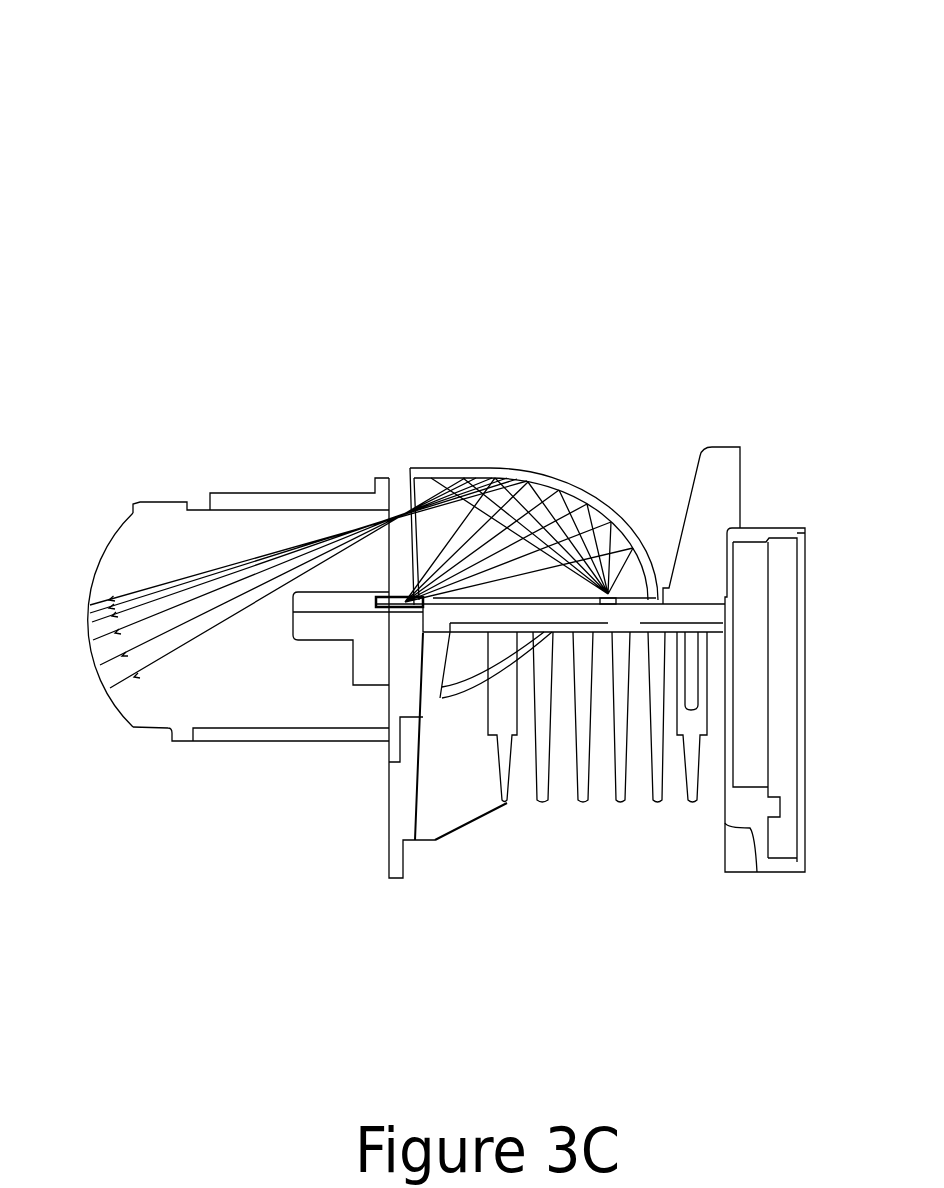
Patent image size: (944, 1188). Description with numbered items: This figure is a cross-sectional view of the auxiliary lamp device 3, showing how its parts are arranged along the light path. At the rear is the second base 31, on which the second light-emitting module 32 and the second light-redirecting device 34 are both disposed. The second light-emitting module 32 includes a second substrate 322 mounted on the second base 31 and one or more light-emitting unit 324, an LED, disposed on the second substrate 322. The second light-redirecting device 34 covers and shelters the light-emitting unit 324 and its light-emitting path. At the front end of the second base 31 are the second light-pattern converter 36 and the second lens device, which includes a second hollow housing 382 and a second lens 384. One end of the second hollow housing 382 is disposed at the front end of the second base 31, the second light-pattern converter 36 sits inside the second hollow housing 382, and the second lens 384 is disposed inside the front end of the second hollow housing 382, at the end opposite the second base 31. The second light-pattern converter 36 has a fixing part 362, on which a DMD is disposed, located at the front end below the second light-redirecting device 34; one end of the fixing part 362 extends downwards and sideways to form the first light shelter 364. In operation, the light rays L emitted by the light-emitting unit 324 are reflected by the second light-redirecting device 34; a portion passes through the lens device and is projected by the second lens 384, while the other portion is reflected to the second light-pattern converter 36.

The auxiliary lamp device 3 is at (835, 40).
The second base 31 is at (705, 612).
The second light-emitting module 32 is at (573, 887).
The second substrate 322 is at (562, 600).
The light-emitting unit 324 is at (610, 597).
The second light-redirecting device 34 is at (490, 469).
The second light-pattern converter 36 is at (243, 837).
The fixing part 362 is at (383, 611).
The first light shelter 364 is at (377, 590).
The second hollow housing 382 is at (192, 742).
The second lens 384 is at (110, 540).
The light L is at (125, 608).